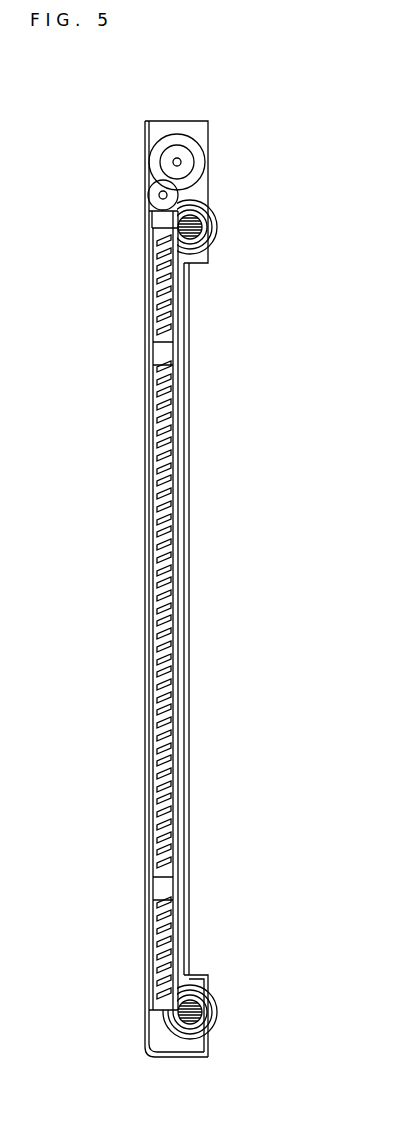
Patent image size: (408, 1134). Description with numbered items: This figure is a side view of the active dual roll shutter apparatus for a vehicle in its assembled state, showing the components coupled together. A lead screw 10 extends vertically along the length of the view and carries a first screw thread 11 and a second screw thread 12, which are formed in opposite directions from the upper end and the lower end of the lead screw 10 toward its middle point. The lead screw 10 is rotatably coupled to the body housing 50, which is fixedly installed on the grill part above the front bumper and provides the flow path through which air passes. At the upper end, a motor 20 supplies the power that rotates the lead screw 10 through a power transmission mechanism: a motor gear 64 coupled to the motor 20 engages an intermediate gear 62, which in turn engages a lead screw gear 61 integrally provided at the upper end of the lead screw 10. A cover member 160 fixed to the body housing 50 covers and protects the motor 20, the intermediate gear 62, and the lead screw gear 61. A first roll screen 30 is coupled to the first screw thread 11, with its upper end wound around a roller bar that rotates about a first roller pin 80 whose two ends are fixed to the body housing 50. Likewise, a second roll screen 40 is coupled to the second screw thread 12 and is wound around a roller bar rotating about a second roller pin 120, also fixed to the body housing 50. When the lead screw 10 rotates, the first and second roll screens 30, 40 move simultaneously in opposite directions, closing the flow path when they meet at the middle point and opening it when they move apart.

The lead screw 10 is at (153, 500).
The first screw thread 11 is at (160, 418).
The second screw thread 12 is at (160, 805).
The motor 20 is at (132, 138).
The first roll screen 30 is at (220, 227).
The second roll screen 40 is at (220, 1010).
The body housing 50 is at (190, 537).
The lead screw gear 61 is at (152, 222).
The intermediate gear 62 is at (150, 192).
The motor gear 64 is at (170, 157).
The first roller pin 80 is at (207, 252).
The second roller pin 120 is at (207, 1030).
The cover member 160 is at (210, 138).